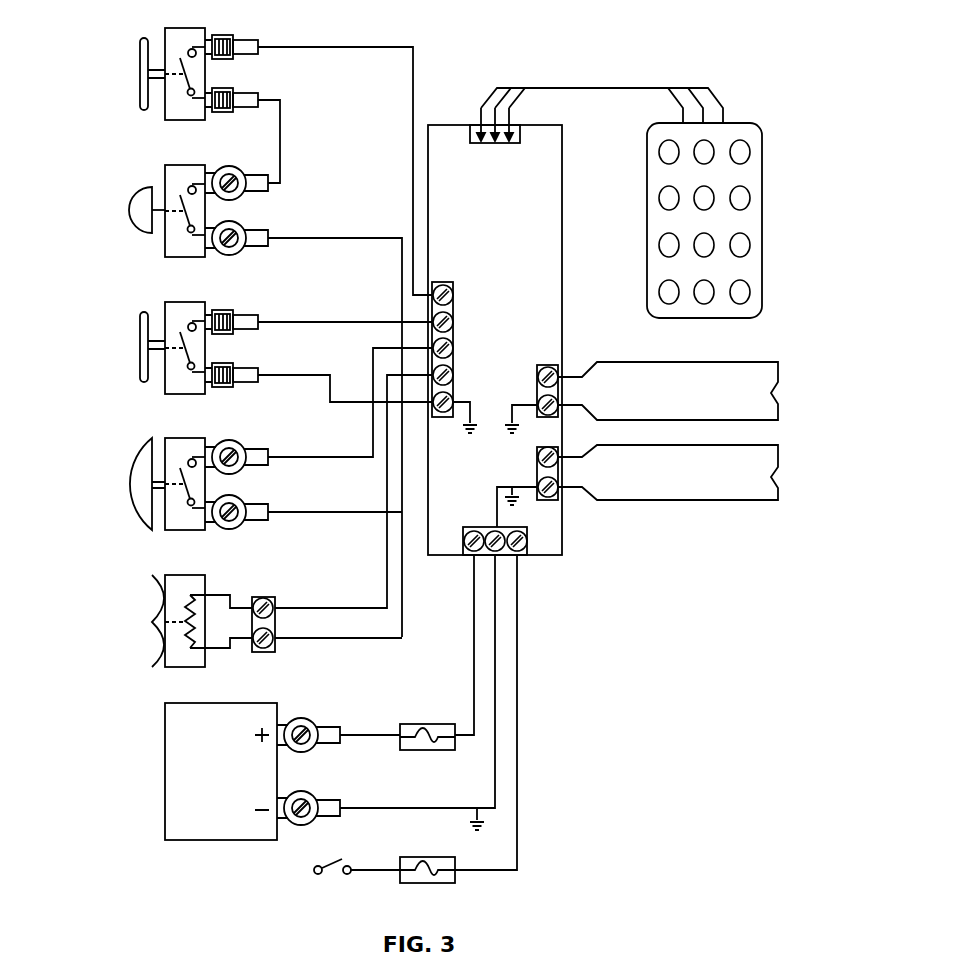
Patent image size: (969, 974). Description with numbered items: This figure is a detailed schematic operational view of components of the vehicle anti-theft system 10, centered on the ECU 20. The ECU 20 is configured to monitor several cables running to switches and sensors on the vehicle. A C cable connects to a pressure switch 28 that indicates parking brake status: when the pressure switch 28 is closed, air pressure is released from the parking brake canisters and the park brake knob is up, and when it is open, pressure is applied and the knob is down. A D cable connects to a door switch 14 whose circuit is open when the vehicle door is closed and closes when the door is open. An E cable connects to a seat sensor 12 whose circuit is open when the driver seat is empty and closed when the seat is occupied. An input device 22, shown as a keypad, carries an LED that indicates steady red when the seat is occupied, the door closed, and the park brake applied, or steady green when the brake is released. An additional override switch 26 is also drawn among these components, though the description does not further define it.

The vehicle anti-theft system 10 is at (470, 40).
The seat sensor 12 is at (157, 665).
The door switch 14 is at (144, 383).
The ECU 20 is at (553, 555).
The input device 22 is at (740, 123).
The officer override switch 26 is at (142, 530).
The pressure switch 28 is at (137, 110).